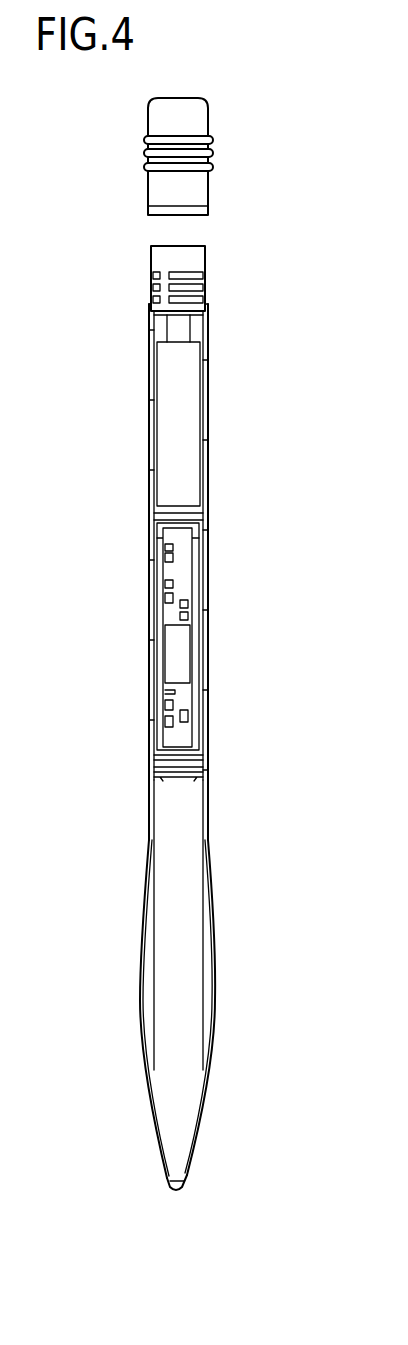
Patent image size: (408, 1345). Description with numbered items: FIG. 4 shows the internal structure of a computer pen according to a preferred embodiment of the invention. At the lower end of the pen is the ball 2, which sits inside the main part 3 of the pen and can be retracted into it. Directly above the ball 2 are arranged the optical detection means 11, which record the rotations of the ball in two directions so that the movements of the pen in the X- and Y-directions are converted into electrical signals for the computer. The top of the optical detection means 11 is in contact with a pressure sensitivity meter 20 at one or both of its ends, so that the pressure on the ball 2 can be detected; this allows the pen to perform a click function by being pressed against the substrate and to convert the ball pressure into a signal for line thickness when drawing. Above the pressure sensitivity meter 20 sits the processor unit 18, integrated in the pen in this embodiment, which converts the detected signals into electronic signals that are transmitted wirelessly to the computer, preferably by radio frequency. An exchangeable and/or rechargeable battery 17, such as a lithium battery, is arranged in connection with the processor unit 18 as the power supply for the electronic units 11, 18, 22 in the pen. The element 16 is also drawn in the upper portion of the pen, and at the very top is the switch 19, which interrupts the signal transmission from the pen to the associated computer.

The ball 2 is at (182, 1182).
The main part 3 is at (208, 677).
The optical detection means 11 is at (193, 993).
The connector block 16 is at (205, 295).
The battery 17 is at (192, 435).
The processor unit 18 is at (187, 590).
The switch 19 is at (220, 190).
The pressure sensitivity meter 20 is at (185, 767).
The battery terminal 22 is at (185, 331).